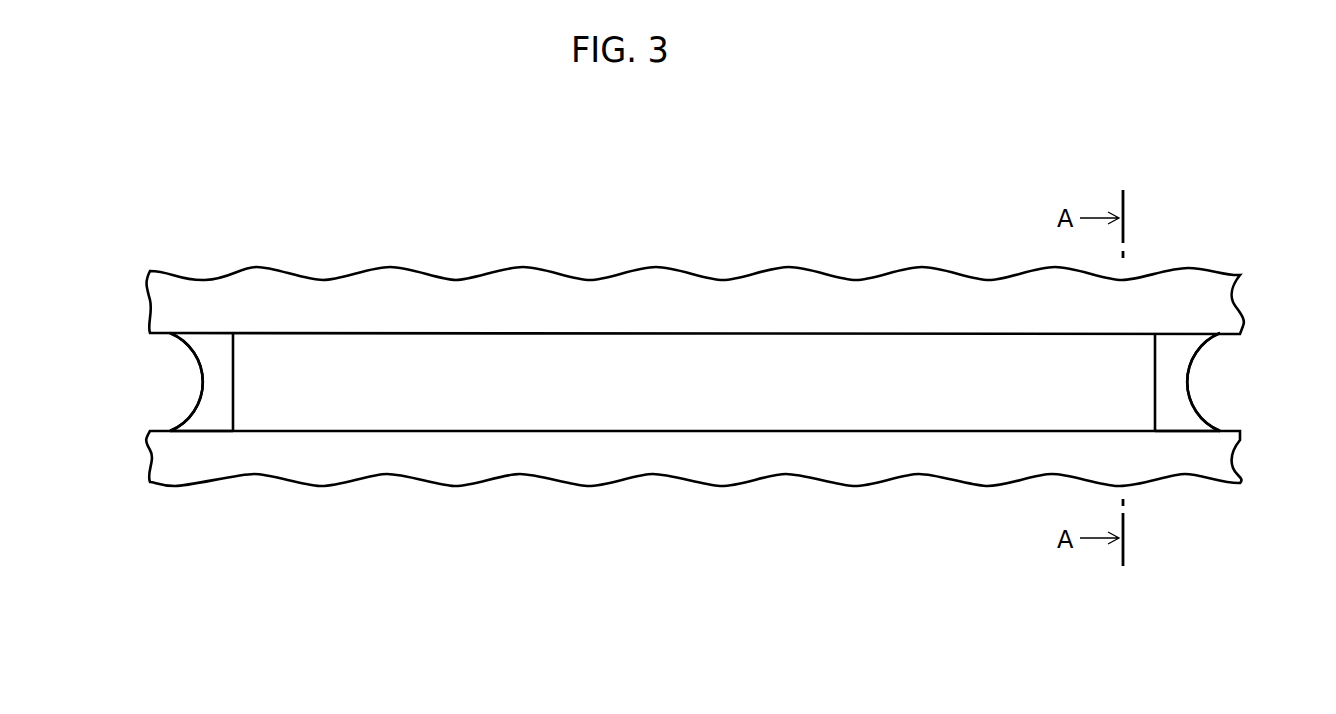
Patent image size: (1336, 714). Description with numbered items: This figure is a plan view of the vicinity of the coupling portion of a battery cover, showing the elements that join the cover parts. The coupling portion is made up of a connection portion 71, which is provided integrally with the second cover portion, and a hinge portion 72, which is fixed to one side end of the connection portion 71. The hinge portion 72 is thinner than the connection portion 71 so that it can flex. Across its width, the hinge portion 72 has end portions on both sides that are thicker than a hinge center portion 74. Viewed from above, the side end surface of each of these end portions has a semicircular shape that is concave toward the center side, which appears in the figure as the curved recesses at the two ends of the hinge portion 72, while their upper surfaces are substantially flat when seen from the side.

The connection portion 71 is at (522, 452).
The hinge portion 72 is at (584, 321).
The hinge center portion 74 is at (420, 375).